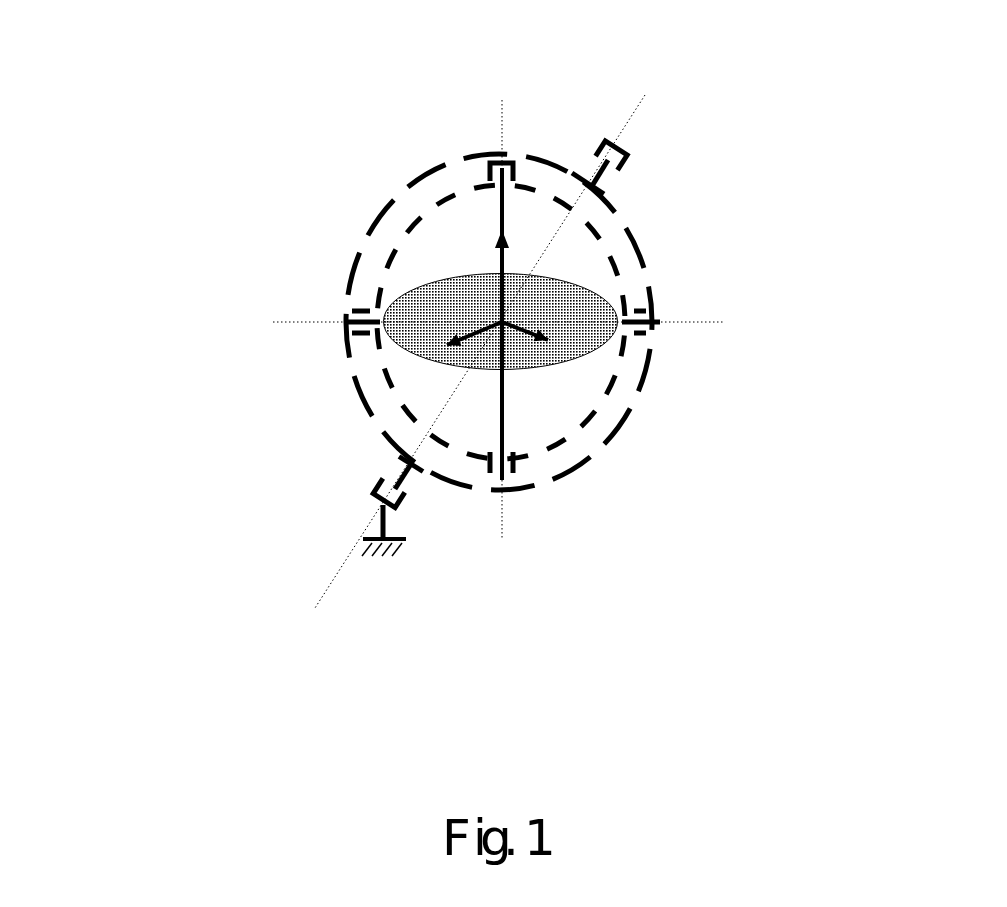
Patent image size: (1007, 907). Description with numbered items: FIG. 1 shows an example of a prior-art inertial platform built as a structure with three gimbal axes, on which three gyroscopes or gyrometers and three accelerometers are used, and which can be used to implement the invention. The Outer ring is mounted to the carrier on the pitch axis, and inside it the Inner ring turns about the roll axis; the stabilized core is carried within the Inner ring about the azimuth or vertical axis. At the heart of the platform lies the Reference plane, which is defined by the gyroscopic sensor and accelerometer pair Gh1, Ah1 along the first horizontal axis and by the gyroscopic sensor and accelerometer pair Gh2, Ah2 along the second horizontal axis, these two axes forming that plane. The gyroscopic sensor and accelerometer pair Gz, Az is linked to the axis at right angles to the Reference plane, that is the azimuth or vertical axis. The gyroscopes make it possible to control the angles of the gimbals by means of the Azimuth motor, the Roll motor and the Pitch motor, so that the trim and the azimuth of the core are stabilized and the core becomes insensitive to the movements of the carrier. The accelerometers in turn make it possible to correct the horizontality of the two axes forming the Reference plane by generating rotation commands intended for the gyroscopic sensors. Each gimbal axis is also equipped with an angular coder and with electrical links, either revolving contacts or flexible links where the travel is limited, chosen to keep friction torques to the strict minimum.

The outer ring Outer ring is at (475, 140).
The inner ring Inner ring is at (403, 208).
The reference plane Reference plane is at (577, 357).
The azimuth motor Azimuth motor is at (528, 175).
The pitch motor Pitch motor is at (633, 159).
The roll motor Roll motor is at (665, 317).
The azimuth axis gyro/accelerometer measurement axis Gz, Az is at (470, 324).
The first horizontal measurement axis Gh1, Ah1 is at (456, 325).
The second horizontal measurement axis Gh2, Ah2 is at (547, 322).